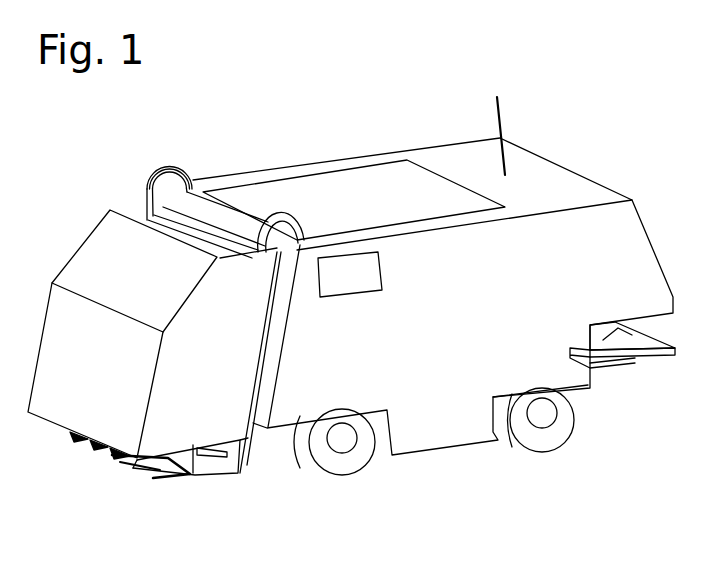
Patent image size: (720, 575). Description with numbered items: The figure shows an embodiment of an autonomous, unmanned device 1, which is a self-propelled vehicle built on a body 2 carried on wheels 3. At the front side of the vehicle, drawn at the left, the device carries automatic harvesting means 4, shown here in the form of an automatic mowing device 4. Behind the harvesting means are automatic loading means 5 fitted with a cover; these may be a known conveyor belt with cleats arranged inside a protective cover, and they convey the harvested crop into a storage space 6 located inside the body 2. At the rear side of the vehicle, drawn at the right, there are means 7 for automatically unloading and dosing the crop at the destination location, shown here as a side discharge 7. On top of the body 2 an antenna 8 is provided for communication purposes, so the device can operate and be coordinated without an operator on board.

The autonomous, unmanned device 1 is at (413, 122).
The body 2 is at (442, 427).
The wheels 3 is at (337, 463).
The automatic harvesting means 4 is at (137, 465).
The automatic loading means 5 is at (145, 180).
The storage space 6 is at (323, 208).
The means for automatically unloading and dosing crop 7 is at (633, 343).
The antenna 8 is at (500, 107).